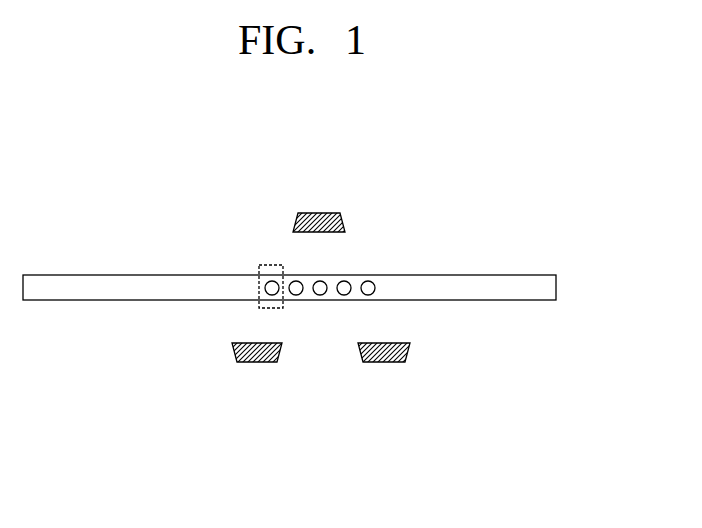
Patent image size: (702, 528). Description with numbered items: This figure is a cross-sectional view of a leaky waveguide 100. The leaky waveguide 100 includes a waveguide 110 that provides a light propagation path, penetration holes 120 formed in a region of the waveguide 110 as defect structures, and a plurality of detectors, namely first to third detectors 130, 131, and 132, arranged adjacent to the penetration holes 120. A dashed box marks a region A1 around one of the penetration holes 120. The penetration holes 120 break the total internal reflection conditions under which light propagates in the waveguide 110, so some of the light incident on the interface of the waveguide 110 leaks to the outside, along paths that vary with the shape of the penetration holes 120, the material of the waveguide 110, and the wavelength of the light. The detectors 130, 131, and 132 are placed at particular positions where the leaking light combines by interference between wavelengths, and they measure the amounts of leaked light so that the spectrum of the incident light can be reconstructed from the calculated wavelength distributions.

The leaky waveguide 100 is at (516, 179).
The waveguide 110 is at (172, 287).
The penetration holes 120 is at (368, 280).
The region A1 is at (274, 265).
The first detector 130 is at (319, 212).
The second detector 131 is at (256, 362).
The third detector 132 is at (382, 362).